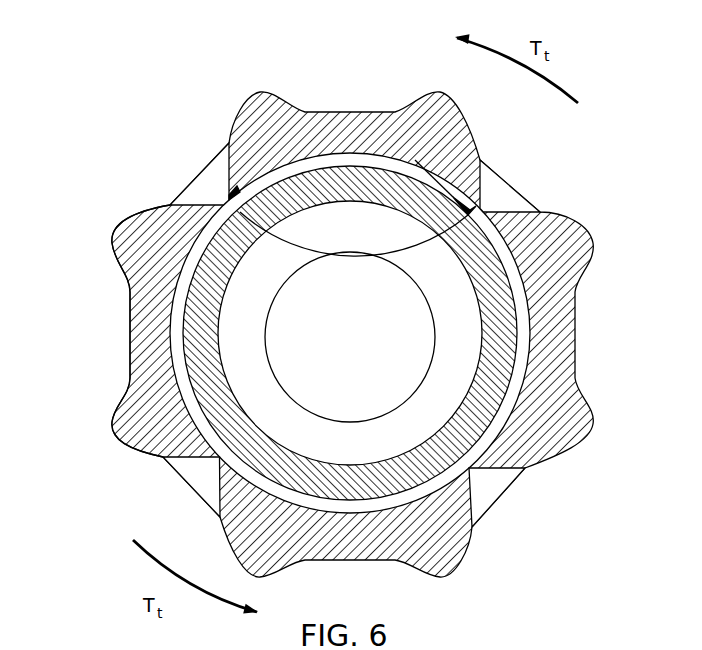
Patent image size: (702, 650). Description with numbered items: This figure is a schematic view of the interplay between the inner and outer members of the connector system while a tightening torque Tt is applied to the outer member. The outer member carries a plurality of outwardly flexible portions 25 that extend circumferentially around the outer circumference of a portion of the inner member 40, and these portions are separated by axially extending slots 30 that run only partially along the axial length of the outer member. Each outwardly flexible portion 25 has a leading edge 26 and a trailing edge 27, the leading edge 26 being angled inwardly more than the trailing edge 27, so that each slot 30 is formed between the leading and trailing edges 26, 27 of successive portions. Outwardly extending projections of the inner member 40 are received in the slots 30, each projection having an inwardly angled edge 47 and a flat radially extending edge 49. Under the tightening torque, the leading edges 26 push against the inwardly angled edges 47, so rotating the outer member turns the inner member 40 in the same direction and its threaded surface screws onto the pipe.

The axially extending slots 30 is at (168, 97).
The outwardly flexible portions 25 is at (133, 328).
The leading edge 26 is at (502, 212).
The trailing edge 27 is at (237, 184).
The inner member 40 is at (205, 355).
The inwardly angled edge 47 is at (474, 212).
The flat radially extending edge 49 is at (440, 190).